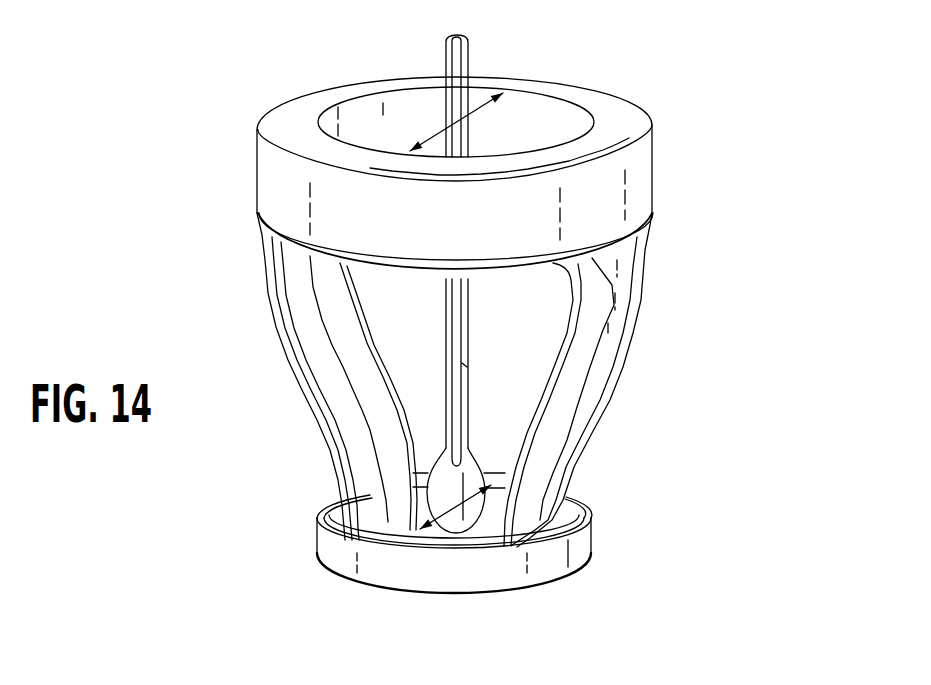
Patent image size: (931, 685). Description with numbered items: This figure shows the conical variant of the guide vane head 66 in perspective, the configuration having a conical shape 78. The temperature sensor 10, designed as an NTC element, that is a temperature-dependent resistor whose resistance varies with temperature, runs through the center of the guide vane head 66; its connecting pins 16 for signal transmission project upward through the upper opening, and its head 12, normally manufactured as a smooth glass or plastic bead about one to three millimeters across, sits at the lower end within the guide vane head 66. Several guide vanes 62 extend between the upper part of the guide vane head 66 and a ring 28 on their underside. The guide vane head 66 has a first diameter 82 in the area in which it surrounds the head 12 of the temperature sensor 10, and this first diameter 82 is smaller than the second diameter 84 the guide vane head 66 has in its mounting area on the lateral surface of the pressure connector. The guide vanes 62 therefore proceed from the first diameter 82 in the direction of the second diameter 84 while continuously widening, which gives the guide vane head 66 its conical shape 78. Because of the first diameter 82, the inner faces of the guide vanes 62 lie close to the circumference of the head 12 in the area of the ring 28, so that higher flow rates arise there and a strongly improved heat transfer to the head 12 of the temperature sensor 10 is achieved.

The temperature sensor 10 is at (423, 337).
The head 12 is at (440, 493).
The connecting pins 16 is at (447, 65).
The ring 28 is at (410, 570).
The guide vanes 62 is at (338, 395).
The guide vane head 66 is at (695, 158).
The conical shape 78 is at (622, 418).
The first diameter 82 is at (455, 510).
The second diameter 84 is at (500, 100).